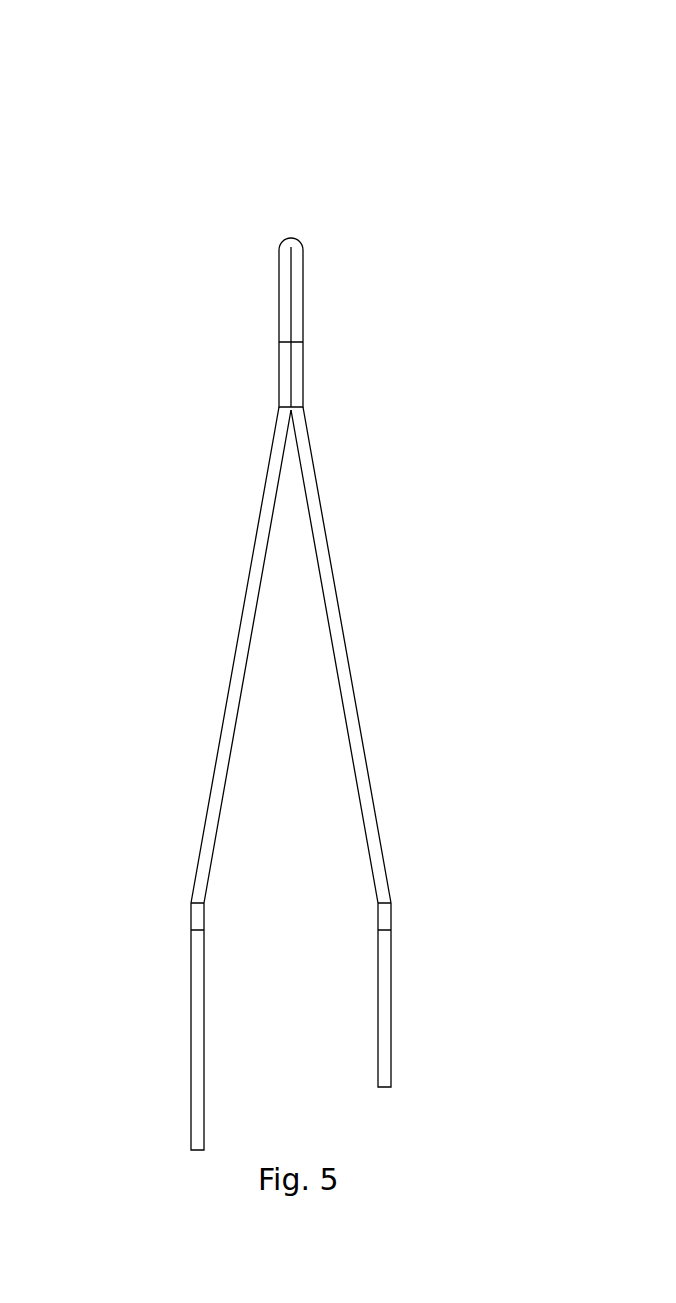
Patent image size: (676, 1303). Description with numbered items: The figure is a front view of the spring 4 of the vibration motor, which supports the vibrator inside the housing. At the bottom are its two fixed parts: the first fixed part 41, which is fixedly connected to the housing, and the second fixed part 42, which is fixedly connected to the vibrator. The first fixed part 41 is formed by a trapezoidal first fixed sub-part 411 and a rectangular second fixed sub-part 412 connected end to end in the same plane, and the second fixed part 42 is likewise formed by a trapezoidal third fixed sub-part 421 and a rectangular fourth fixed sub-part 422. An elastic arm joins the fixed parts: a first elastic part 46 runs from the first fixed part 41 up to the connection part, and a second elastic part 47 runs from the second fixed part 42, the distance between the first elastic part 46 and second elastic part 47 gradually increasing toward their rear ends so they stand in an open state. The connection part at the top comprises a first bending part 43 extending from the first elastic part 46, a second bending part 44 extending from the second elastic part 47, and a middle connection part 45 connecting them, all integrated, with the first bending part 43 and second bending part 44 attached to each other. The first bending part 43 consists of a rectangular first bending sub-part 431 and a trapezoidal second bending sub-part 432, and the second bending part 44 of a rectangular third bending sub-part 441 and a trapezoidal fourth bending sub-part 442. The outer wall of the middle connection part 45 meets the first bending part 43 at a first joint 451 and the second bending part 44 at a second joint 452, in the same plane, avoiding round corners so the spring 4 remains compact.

The spring 4 is at (313, 37).
The first fixed part 41 is at (478, 995).
The first fixed sub-part 411 is at (387, 918).
The second fixed sub-part 412 is at (387, 1002).
The second fixed part 42 is at (110, 1014).
The third fixed sub-part 421 is at (198, 923).
The fourth fixed sub-part 422 is at (198, 1013).
The first bending part 43 is at (384, 334).
The first bending sub-part 431 is at (300, 297).
The second bending sub-part 432 is at (300, 370).
The second bending part 44 is at (200, 327).
The third bending sub-part 441 is at (282, 313).
The fourth bending sub-part 442 is at (282, 385).
The middle connection part 45 is at (292, 239).
The first joint 451 is at (303, 251).
The second joint 452 is at (278, 251).
The first elastic part 46 is at (343, 680).
The second elastic part 47 is at (233, 682).